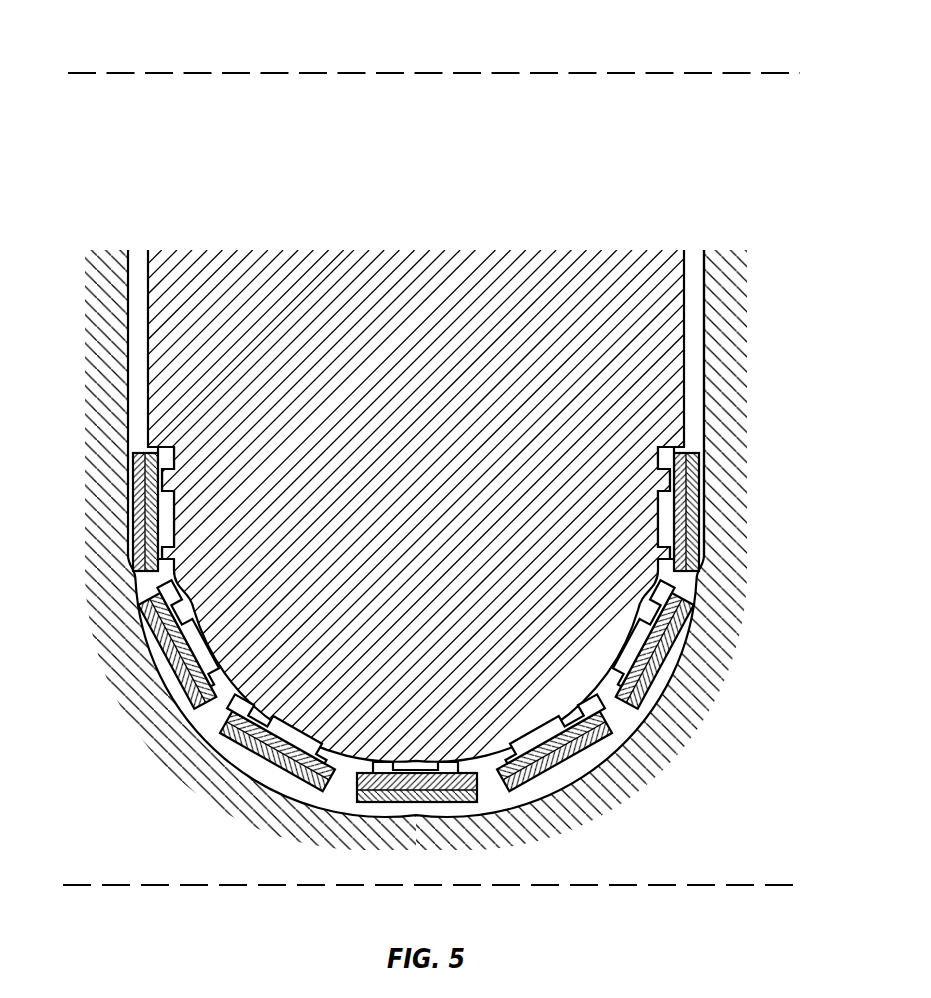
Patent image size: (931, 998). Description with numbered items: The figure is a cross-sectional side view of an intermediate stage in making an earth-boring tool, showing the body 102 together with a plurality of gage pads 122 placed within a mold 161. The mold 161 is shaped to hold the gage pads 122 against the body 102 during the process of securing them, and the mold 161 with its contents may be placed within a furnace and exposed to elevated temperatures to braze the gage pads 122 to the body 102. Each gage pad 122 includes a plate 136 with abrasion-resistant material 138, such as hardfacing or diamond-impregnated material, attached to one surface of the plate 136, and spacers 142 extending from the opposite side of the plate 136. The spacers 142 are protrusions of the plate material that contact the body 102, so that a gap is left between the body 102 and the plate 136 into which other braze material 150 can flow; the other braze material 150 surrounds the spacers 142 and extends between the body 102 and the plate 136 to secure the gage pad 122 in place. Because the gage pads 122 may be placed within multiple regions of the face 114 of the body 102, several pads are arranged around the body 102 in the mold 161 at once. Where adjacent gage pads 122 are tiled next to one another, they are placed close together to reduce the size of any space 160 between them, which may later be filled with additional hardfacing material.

The space 160 is at (345, 73).
The mold 161 is at (705, 412).
The face 114 is at (490, 784).
The body 102 is at (433, 535).
The gage pad 122 is at (207, 467).
The abrasion-resistant material 138 is at (142, 452).
The plate 136 is at (152, 453).
The spacer 142 is at (173, 461).
The other braze material 150 is at (425, 761).